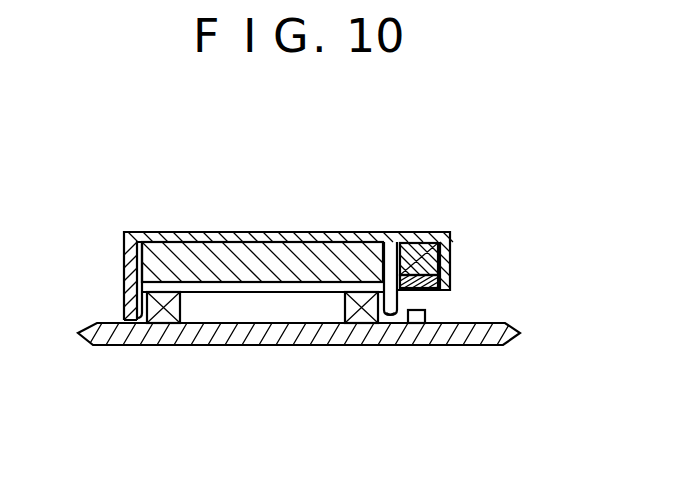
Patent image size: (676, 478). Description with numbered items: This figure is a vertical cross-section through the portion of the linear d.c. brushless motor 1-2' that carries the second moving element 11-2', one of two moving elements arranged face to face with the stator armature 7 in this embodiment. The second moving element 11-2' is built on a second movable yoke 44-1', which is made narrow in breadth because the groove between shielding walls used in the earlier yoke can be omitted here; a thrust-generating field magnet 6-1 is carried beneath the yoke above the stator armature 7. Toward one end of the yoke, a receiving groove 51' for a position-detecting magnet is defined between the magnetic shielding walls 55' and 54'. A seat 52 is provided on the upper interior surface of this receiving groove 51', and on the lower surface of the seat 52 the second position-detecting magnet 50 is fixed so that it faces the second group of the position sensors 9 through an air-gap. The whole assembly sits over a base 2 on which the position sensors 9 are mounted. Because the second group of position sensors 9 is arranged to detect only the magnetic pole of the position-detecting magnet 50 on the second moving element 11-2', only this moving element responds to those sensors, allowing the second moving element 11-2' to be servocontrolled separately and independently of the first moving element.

The linear d.c. brushless motor 1-2' is at (288, 215).
The second movable yoke 44-1' is at (288, 245).
The permanent magnet 6-1 is at (292, 255).
The stator armature 7 is at (222, 297).
The second moving element 11-2' is at (395, 290).
The seat 52 is at (427, 243).
The magnetic shielding wall 54' is at (504, 266).
The magnetic shielding wall 55' is at (376, 367).
The second group of position sensors 9 is at (416, 323).
The receiving groove 51' is at (442, 355).
The second position-detecting magnet 50 is at (432, 293).
The base plate 2 is at (279, 338).